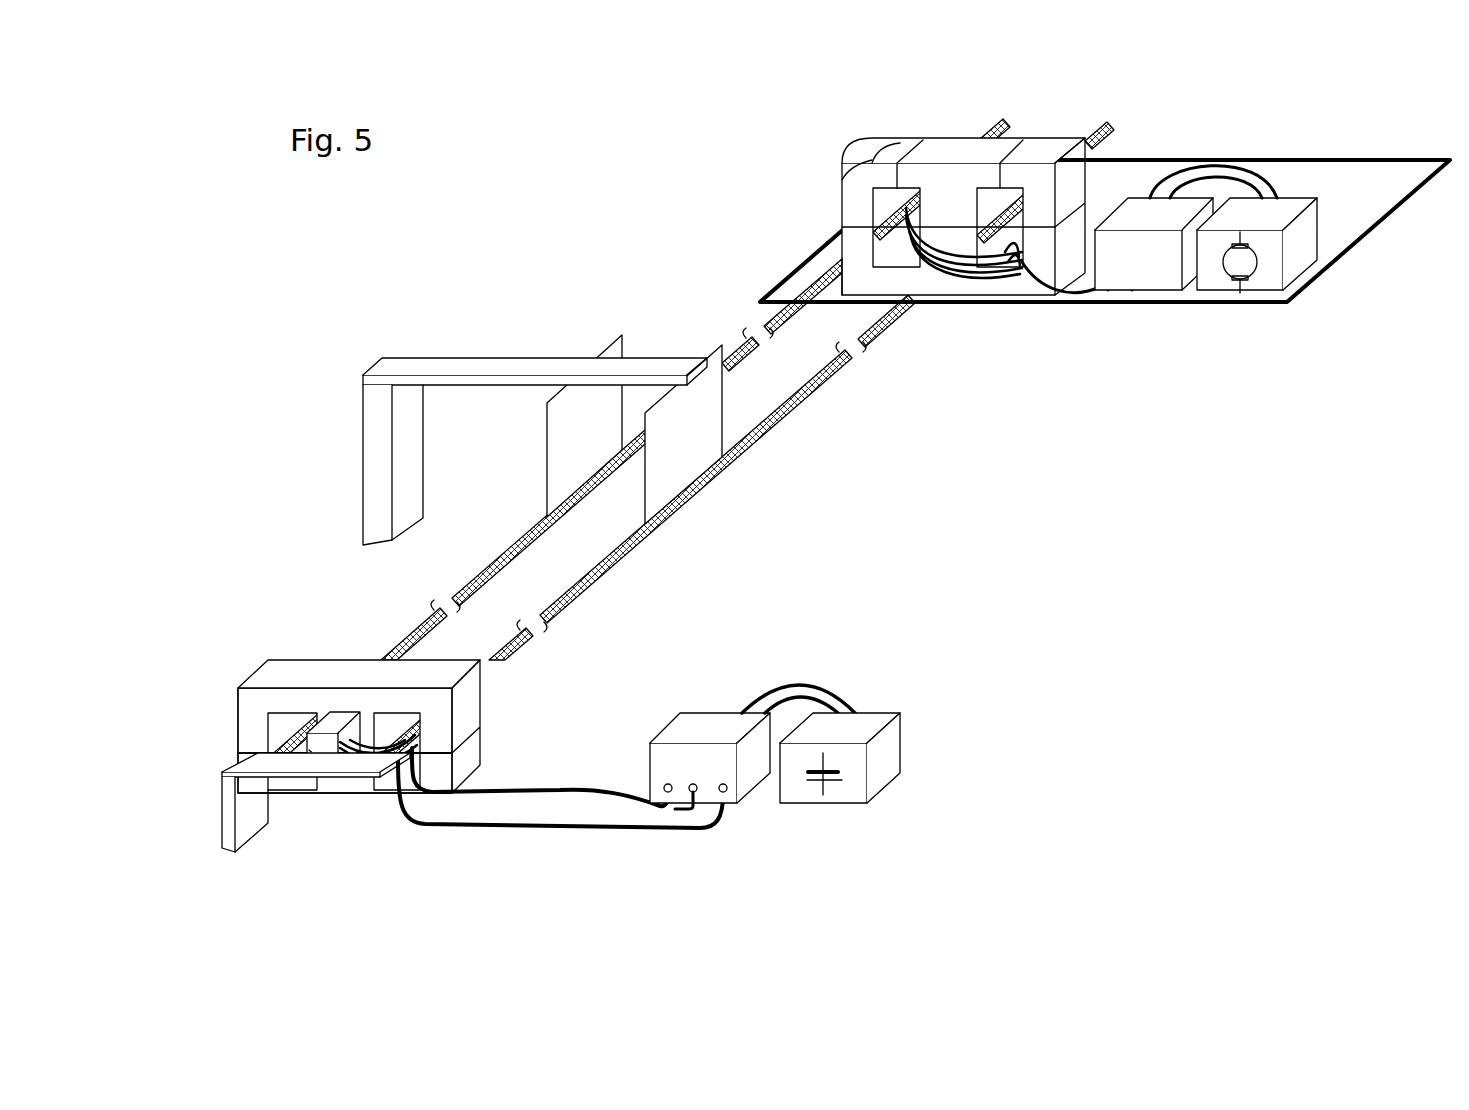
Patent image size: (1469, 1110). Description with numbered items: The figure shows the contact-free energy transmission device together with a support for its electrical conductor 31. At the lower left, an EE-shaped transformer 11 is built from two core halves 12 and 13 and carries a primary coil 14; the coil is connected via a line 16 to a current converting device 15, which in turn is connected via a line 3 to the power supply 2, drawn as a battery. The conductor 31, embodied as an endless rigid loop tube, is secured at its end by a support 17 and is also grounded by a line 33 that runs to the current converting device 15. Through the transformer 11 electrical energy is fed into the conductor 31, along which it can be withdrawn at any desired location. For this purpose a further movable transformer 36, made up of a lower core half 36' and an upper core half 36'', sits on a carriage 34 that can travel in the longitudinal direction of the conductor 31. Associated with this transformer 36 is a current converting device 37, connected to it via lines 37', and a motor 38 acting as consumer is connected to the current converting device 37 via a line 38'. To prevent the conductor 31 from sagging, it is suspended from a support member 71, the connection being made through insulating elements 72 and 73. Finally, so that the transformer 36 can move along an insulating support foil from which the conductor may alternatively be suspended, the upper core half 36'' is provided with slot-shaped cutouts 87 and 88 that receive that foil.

The power supply 2 is at (915, 738).
The line 3 is at (816, 680).
The transformer 11 is at (493, 762).
The core half 12 is at (467, 777).
The core half 13 is at (460, 697).
The primary coil 14 is at (350, 797).
The current converting device 15 is at (700, 706).
The line 16 is at (588, 782).
The support 17 is at (227, 762).
The electrical conductor 31 is at (770, 424).
The line 33 is at (735, 818).
The carriage 34 is at (1316, 295).
The transformer 36 is at (913, 190).
The core half 36' is at (745, 259).
The upper core half 36'' is at (775, 156).
The current converting device 37 is at (1170, 194).
The lines 37' is at (1088, 323).
The motor 38 is at (1318, 245).
The line 38' is at (1276, 179).
The support member 71 is at (437, 344).
The insulating element 72 is at (700, 448).
The insulating element 73 is at (567, 460).
The slot-shaped cutout 87 is at (1015, 143).
The slot-shaped cutout 88 is at (907, 142).